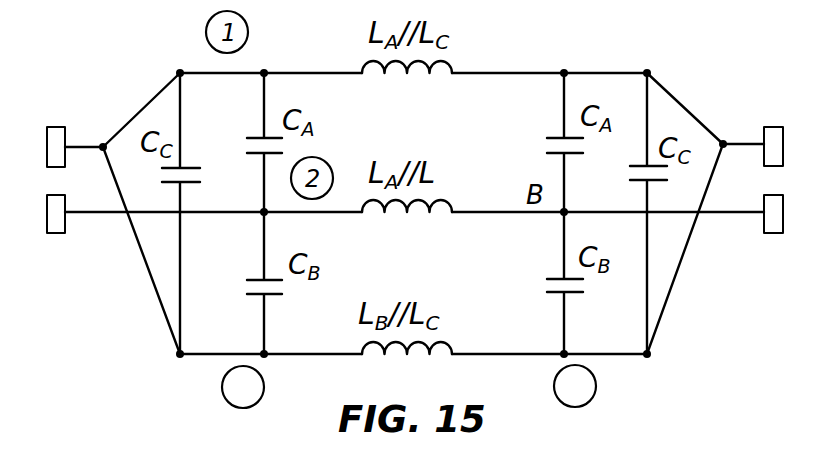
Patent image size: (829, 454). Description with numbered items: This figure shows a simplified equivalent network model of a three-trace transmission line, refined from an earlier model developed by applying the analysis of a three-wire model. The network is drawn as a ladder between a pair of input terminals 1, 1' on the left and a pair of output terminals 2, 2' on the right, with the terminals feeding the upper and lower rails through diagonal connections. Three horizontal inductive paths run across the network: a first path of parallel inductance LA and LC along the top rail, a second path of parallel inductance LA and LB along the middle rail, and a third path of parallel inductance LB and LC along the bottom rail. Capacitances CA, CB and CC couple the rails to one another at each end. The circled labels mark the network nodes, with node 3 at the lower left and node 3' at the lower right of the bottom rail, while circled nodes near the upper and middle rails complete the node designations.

The input terminal 1 is at (57, 147).
The input terminal 1' is at (37, 209).
The output terminal 2 is at (768, 146).
The output terminal 2' is at (793, 209).
The node 3 is at (243, 387).
The node 3' is at (575, 386).